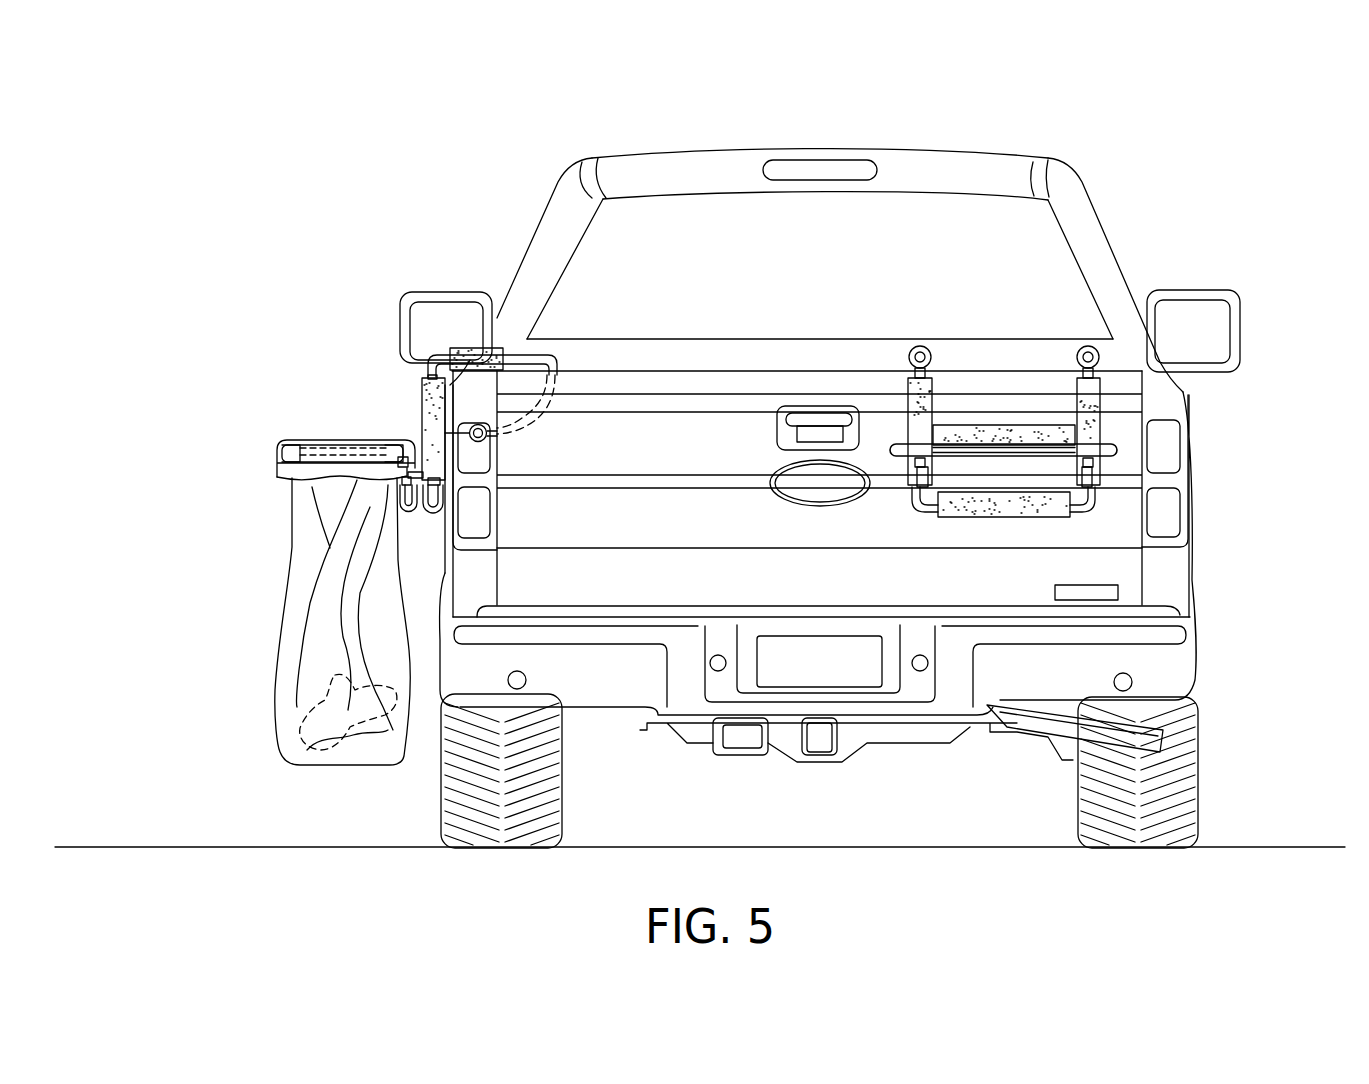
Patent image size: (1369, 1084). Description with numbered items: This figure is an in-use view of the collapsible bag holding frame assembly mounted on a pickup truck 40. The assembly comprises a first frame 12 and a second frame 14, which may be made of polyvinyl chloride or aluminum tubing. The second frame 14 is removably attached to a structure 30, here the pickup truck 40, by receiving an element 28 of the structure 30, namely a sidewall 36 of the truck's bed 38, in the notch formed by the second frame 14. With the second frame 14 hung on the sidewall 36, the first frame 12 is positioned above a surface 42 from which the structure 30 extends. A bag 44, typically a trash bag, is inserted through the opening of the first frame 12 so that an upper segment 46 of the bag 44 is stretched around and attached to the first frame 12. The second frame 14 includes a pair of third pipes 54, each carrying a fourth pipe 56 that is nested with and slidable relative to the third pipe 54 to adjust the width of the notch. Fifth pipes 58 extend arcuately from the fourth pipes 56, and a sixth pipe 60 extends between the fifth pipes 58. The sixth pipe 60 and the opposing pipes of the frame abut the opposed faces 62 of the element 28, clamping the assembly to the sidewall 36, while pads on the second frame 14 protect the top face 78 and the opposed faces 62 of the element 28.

The first frame 12 is at (1127, 450).
The second frame 14 is at (1092, 407).
The element 28 is at (440, 537).
The structure 30 is at (963, 153).
The sidewall 36 is at (445, 568).
The bed 38 is at (997, 577).
The pickup truck 40 is at (1087, 198).
The surface 42 is at (1258, 847).
The bag 44 is at (283, 594).
The upper segment 46 is at (307, 468).
The third pipe 54 is at (463, 346).
The fourth pipe 56 is at (515, 347).
The fifth pipe 58 is at (558, 402).
The sixth pipe 60 is at (472, 425).
The opposed faces 62 is at (507, 522).
The top face 78 is at (480, 377).